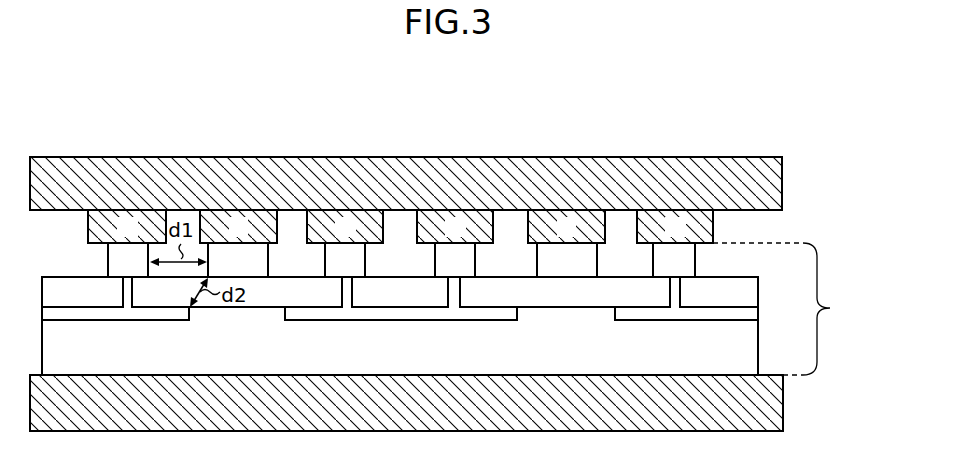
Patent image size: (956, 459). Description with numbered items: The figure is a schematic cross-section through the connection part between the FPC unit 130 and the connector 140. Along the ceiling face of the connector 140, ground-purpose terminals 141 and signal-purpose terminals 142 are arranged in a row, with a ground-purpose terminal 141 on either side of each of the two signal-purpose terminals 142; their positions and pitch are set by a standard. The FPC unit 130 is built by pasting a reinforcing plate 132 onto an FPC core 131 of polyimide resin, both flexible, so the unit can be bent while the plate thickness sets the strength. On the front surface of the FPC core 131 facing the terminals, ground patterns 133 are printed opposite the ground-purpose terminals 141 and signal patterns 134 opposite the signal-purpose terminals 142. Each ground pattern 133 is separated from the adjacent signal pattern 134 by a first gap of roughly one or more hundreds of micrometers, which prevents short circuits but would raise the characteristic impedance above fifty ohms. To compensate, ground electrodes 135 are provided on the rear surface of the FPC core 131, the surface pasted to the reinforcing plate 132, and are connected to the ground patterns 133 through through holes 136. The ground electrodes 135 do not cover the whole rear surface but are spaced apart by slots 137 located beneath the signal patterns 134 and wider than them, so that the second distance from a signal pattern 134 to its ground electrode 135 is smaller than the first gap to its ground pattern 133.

The FPC unit 130 is at (792, 309).
The FPC core 131 is at (760, 293).
The reinforcing plate 132 is at (760, 350).
The ground pattern 133 is at (108, 262).
The signal pattern 134 is at (268, 262).
The ground electrode 135 is at (111, 320).
The through hole 136 is at (134, 291).
The slot 137 is at (210, 318).
The connector 140 is at (737, 157).
The ground-purpose terminal 141 is at (143, 220).
The signal-purpose terminal 142 is at (256, 220).